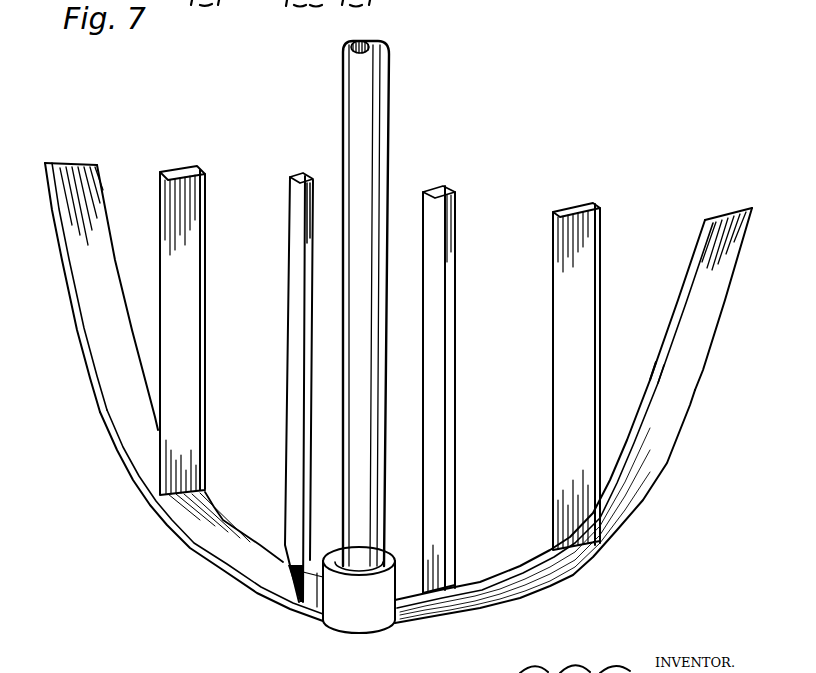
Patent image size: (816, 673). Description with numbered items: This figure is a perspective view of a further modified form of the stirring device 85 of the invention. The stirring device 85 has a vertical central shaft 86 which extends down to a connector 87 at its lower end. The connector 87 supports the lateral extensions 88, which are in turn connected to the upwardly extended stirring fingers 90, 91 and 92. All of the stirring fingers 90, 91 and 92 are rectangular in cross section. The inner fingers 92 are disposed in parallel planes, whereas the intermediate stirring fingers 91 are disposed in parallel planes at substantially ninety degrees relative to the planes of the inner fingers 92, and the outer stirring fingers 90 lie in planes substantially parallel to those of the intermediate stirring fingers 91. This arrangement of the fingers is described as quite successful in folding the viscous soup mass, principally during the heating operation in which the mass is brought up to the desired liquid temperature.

The stirring device 85 is at (362, 136).
The vertical central shaft 86 is at (357, 123).
The connector 87 is at (350, 612).
The lateral extensions 88 is at (262, 572).
The outer stirring fingers 90 is at (107, 341).
The intermediate stirring fingers 91 is at (187, 323).
The inner stirring fingers 92 is at (292, 253).